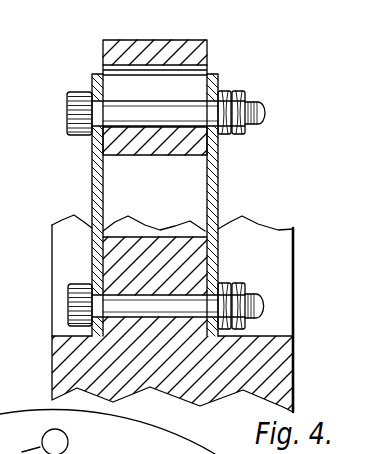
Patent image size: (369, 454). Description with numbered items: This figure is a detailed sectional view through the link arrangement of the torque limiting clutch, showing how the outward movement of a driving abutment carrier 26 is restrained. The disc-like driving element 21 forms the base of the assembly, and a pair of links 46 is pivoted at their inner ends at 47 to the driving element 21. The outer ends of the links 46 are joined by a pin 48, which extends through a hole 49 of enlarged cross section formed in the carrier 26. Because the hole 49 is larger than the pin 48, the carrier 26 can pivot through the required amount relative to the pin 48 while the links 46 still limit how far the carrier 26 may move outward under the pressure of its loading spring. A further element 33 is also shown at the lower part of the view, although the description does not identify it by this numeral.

The driving abutment carrier 26 is at (142, 40).
The hole 49 is at (191, 76).
The pin 48 is at (122, 110).
The links 46 is at (98, 186).
The pivot 47 is at (203, 279).
The driving element 21 is at (62, 350).
The rod 33 is at (63, 440).